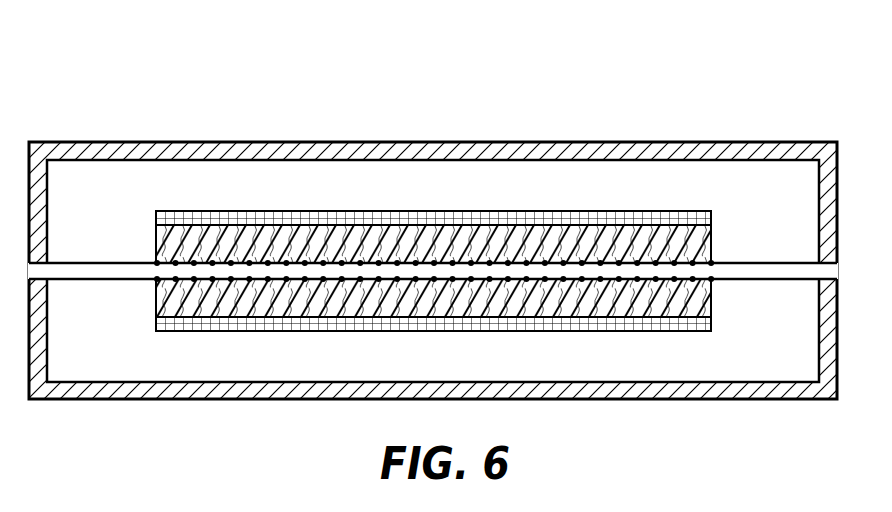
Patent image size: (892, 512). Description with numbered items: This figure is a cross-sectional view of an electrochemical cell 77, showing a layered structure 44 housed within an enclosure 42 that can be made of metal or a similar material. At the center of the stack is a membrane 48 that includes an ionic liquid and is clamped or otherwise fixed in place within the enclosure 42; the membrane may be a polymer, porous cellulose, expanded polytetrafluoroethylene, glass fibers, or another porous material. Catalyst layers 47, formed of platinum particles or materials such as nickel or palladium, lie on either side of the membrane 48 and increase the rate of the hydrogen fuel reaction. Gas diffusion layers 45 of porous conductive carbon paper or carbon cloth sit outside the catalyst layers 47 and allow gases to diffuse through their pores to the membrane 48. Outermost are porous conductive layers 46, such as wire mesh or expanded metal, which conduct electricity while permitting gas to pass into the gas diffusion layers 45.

The electrochemical cell 77 is at (683, 58).
The enclosure 42 is at (110, 143).
The layered structure 44 is at (425, 270).
The gas diffusion layers 45 is at (703, 247).
The porous conductive layers 46 is at (157, 218).
The catalyst layers 47 is at (355, 263).
The membrane 48 is at (87, 270).